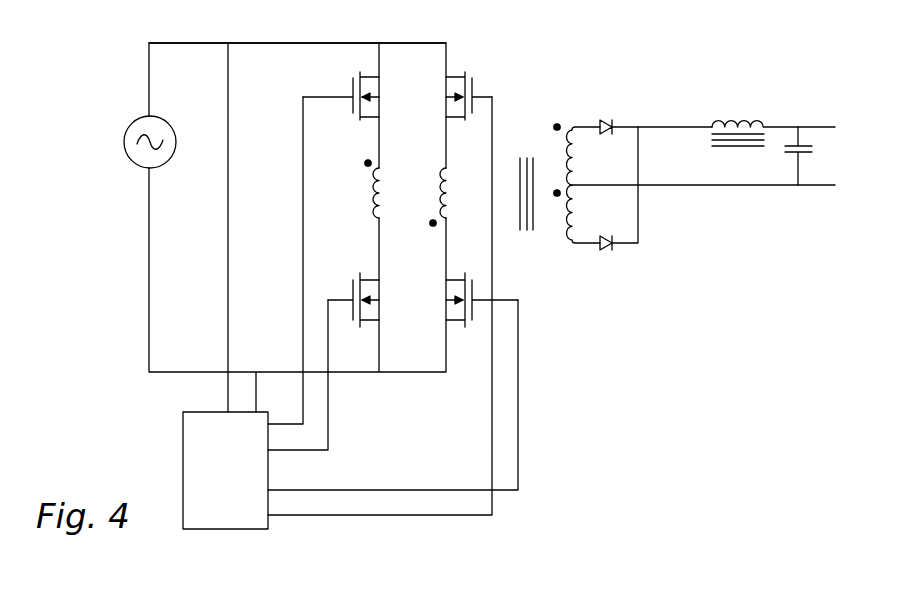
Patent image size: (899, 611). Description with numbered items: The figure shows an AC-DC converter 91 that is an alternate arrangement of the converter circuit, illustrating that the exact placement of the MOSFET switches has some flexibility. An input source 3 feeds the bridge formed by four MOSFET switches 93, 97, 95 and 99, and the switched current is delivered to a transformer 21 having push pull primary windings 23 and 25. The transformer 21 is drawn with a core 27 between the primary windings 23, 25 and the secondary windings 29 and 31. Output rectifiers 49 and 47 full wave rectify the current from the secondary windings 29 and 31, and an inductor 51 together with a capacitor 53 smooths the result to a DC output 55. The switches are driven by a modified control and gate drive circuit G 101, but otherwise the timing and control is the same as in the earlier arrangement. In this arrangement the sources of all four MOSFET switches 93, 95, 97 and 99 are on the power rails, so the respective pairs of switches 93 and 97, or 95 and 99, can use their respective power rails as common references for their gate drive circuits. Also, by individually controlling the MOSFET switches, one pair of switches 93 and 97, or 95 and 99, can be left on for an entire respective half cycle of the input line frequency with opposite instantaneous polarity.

The AC power source 3 is at (121, 136).
The AC-DC converter 91 is at (128, 43).
The MOSFET switch 93 is at (352, 74).
The MOSFET switch 97 is at (476, 91).
The MOSFET switch 95 is at (371, 270).
The MOSFET switch 99 is at (467, 332).
The control and gate drive circuit G 101 is at (165, 450).
The push pull primary winding 23 is at (364, 198).
The push pull primary winding 25 is at (428, 201).
The transformer 21 is at (530, 144).
The transformer core 27 is at (511, 160).
The secondary winding 29 is at (560, 148).
The secondary winding 31 is at (558, 220).
The output rectifier 49 is at (600, 118).
The output rectifier 47 is at (604, 258).
The inductor 51 is at (718, 116).
The capacitor 53 is at (785, 162).
The output 55 is at (872, 140).